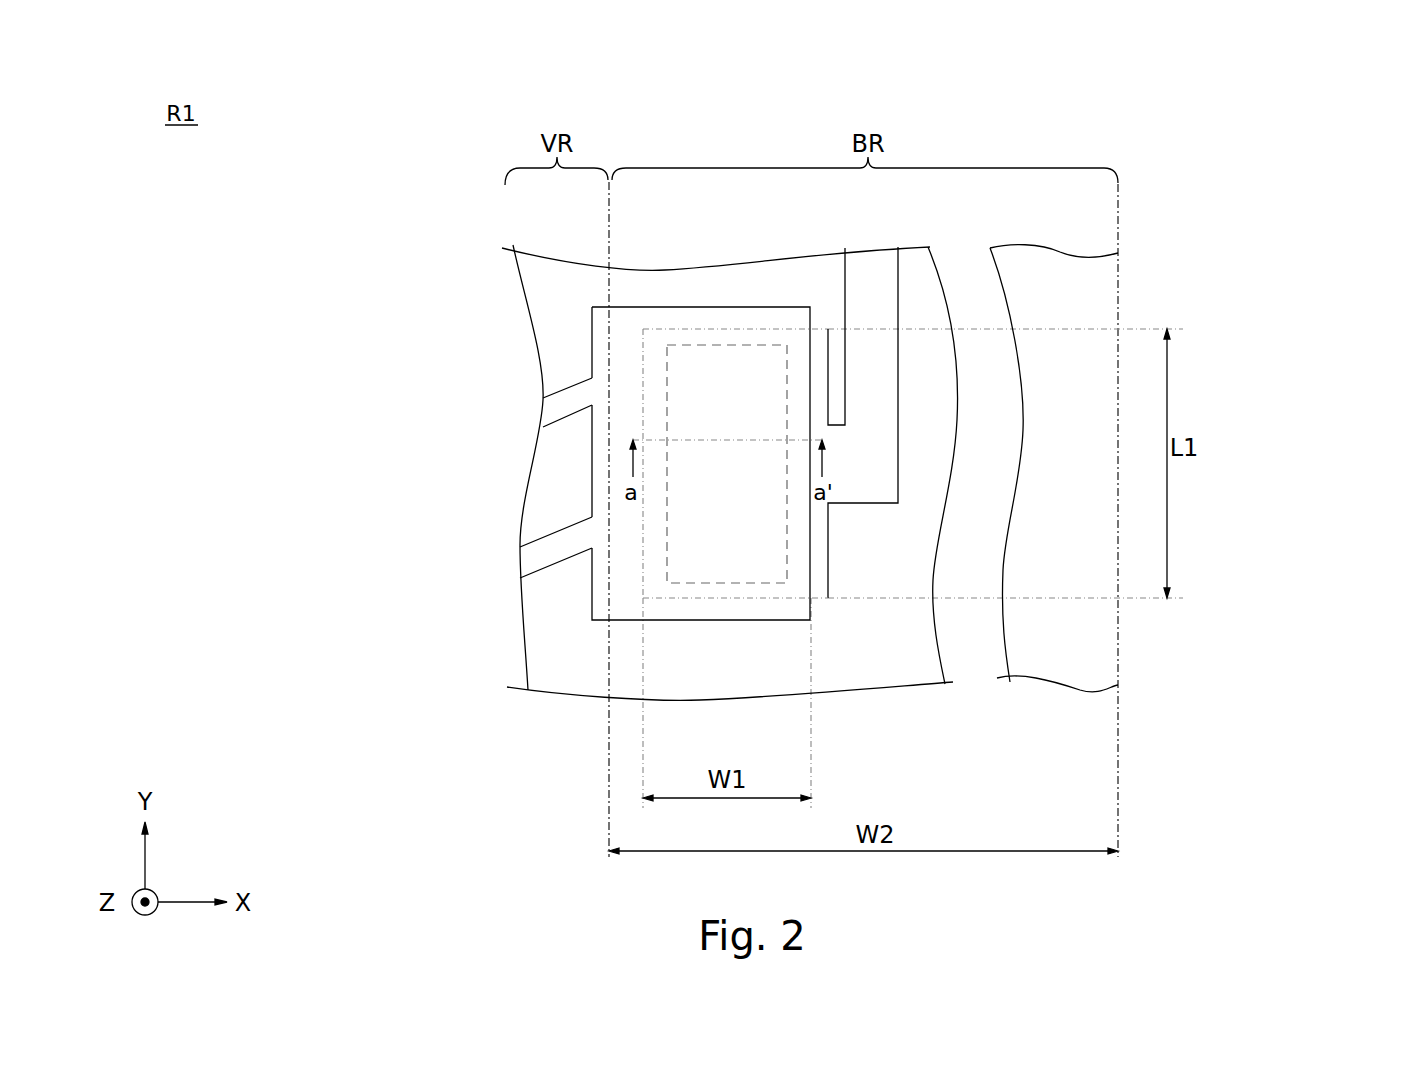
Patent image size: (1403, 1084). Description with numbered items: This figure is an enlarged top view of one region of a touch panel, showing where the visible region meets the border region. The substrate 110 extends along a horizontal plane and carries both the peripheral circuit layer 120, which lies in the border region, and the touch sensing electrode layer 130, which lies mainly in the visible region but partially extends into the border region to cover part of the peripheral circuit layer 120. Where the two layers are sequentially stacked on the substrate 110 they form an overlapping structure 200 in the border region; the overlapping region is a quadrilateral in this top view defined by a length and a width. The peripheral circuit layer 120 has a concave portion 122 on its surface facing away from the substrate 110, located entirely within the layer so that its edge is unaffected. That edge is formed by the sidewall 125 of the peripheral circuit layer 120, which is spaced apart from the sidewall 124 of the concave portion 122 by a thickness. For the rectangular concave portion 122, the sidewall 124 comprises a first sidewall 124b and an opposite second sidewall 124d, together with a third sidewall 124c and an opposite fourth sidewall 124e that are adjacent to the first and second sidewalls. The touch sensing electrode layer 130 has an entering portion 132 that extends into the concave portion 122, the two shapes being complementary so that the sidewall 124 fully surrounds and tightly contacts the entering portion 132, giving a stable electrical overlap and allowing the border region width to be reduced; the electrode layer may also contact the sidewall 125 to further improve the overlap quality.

The substrate 110 is at (530, 283).
The peripheral circuit layer 120 is at (860, 253).
The concave portion 122 is at (682, 373).
The entering portion 132 is at (579, 464).
The sidewall of the concave portion 124 is at (911, 398).
The first sidewall 124b is at (649, 418).
The third sidewall 124c is at (748, 330).
The second sidewall 124d is at (799, 380).
The fourth sidewall 124e is at (760, 598).
The sidewall of the peripheral circuit layer 125 is at (683, 318).
The touch sensing electrode layer 130 is at (598, 332).
The overlapping structure 200 is at (627, 540).